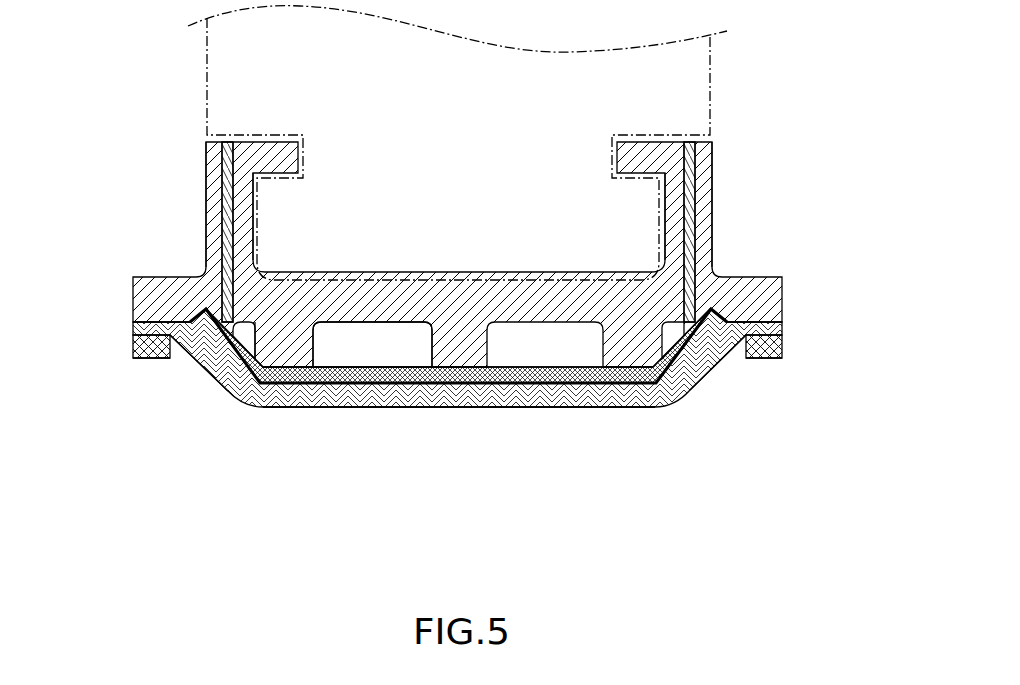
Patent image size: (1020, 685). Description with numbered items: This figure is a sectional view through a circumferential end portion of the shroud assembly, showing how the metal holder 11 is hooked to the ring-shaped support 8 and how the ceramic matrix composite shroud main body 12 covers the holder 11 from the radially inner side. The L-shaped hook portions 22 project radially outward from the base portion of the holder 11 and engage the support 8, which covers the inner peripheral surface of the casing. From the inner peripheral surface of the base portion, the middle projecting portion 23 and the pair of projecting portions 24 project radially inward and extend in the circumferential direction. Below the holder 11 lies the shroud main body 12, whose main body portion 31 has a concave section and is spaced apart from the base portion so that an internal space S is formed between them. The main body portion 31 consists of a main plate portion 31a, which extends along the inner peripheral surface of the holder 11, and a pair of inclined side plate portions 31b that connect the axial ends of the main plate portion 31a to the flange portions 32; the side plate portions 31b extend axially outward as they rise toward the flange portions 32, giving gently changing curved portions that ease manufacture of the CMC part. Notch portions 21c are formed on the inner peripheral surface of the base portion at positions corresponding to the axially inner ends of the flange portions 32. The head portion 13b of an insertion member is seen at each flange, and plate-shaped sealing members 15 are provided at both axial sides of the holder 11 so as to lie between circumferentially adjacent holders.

The support 8 is at (712, 72).
The hook portion 22 is at (700, 137).
The holder 11 is at (206, 164).
The sealing member 15 is at (222, 190).
The notch portion 21c is at (195, 312).
The flange portion 32 is at (137, 330).
The head portion 13b is at (152, 358).
The side plate portion 31b is at (215, 385).
The projecting portion 24 is at (263, 407).
The shroud main body 12 is at (338, 407).
The internal space S is at (370, 352).
The middle projecting portion 23 is at (445, 372).
The main plate portion 31a is at (478, 408).
The main body portion 31 is at (530, 408).